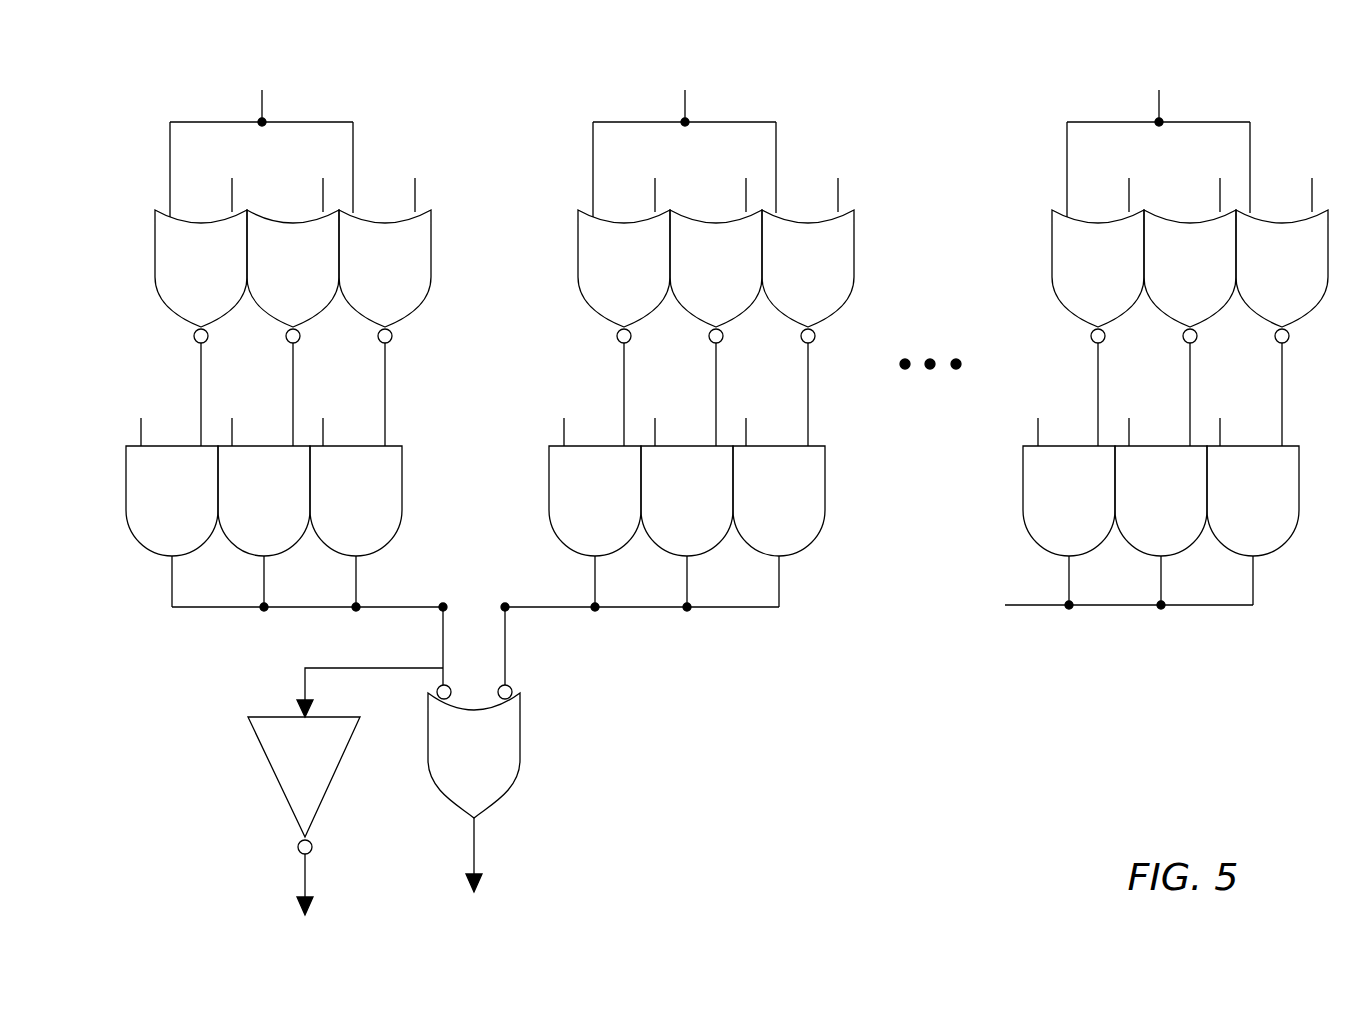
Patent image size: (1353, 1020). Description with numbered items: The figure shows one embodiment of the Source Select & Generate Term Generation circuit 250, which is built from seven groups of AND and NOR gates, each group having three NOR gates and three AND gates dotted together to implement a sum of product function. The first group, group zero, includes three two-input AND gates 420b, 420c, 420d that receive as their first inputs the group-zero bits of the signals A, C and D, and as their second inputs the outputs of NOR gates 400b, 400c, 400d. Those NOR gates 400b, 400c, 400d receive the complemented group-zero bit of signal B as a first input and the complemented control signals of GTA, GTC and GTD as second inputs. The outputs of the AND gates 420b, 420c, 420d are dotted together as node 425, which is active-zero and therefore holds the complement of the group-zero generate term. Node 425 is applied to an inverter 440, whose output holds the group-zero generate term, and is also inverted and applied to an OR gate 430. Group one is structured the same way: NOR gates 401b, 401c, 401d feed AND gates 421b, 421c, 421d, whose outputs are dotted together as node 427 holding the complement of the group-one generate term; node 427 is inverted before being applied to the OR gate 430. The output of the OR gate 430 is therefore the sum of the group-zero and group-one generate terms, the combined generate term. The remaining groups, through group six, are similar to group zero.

The Source Select & Generate Term Generation circuit 250 is at (884, 778).
The NOR gate 400b is at (184, 322).
The NOR gate 400c is at (276, 322).
The NOR gate 400d is at (368, 322).
The NOR gate 401b is at (610, 328).
The NOR gate 401c is at (706, 328).
The NOR gate 401d is at (797, 328).
The AND gate 420b is at (150, 546).
The AND gate 420c is at (252, 546).
The AND gate 420d is at (338, 546).
The AND gate 421b is at (579, 526).
The AND gate 421c is at (676, 526).
The AND gate 421d is at (765, 526).
The node 425 is at (442, 603).
The node 427 is at (505, 603).
The OR gate 430 is at (455, 800).
The inverter 440 is at (287, 790).